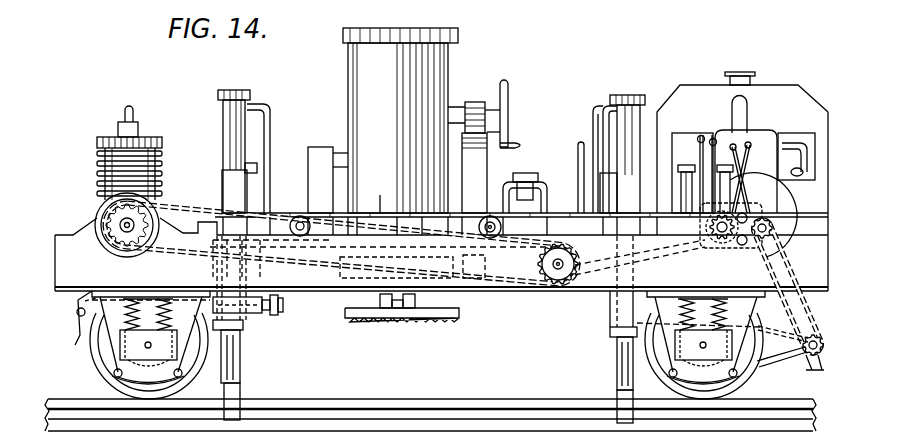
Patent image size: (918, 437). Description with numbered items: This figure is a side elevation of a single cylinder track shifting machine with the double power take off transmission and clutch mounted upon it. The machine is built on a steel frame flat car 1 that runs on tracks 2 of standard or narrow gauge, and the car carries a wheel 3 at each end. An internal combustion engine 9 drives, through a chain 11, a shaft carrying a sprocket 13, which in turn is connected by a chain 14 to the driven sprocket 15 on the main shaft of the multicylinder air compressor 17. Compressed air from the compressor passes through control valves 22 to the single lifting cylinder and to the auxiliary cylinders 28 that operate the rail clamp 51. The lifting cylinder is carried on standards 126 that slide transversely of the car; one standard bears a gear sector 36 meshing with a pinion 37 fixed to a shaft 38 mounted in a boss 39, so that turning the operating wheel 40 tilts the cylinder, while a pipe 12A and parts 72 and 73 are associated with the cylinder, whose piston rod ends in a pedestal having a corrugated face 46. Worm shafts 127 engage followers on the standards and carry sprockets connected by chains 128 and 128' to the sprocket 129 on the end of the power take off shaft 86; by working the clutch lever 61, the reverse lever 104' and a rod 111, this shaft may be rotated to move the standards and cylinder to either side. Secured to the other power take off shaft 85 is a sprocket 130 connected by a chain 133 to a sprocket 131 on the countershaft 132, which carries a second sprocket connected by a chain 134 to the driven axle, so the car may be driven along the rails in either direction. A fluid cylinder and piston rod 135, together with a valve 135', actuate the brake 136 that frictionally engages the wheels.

The steel frame flat car 1 is at (57, 289).
The tracks 2 is at (422, 404).
The wheel 3 is at (100, 373).
The internal combustion engine 9 is at (806, 110).
The chain 11 is at (645, 245).
The sprocket 13 is at (541, 267).
The chain 14 is at (184, 205).
The driven sprocket 15 is at (117, 242).
The air compressor 17 is at (97, 157).
The control valves 22 is at (530, 173).
The auxiliary cylinders 28 is at (223, 124).
The gear sector 36 is at (490, 135).
The pinion 37 is at (473, 102).
The shaft 38 is at (506, 100).
The boss 39 is at (448, 102).
The operating wheel 40 is at (509, 96).
The corrugated face 46 is at (390, 320).
The rail clamp 51 is at (241, 396).
The clutch lever 61 is at (714, 136).
The lever 72 is at (736, 144).
The pipe 73 is at (790, 143).
The power take off shaft 85 is at (757, 210).
The power take off shaft 86 is at (726, 250).
The reverse lever 104' is at (763, 155).
The rod 111 is at (702, 134).
The standards 126 is at (315, 147).
The worm shafts 127 is at (491, 216).
The chain 128 is at (568, 177).
The chain 128' is at (383, 196).
The sprocket 129 is at (720, 242).
The sprocket 130 is at (778, 224).
The sprocket 131 is at (808, 370).
The countershaft 132 is at (822, 314).
The chain 133 is at (800, 282).
The chain 134 is at (775, 362).
The fluid cylinder and piston rod 135 is at (255, 322).
The valve 135' is at (700, 163).
The brake 136 is at (80, 332).
The pipe 12A is at (456, 95).